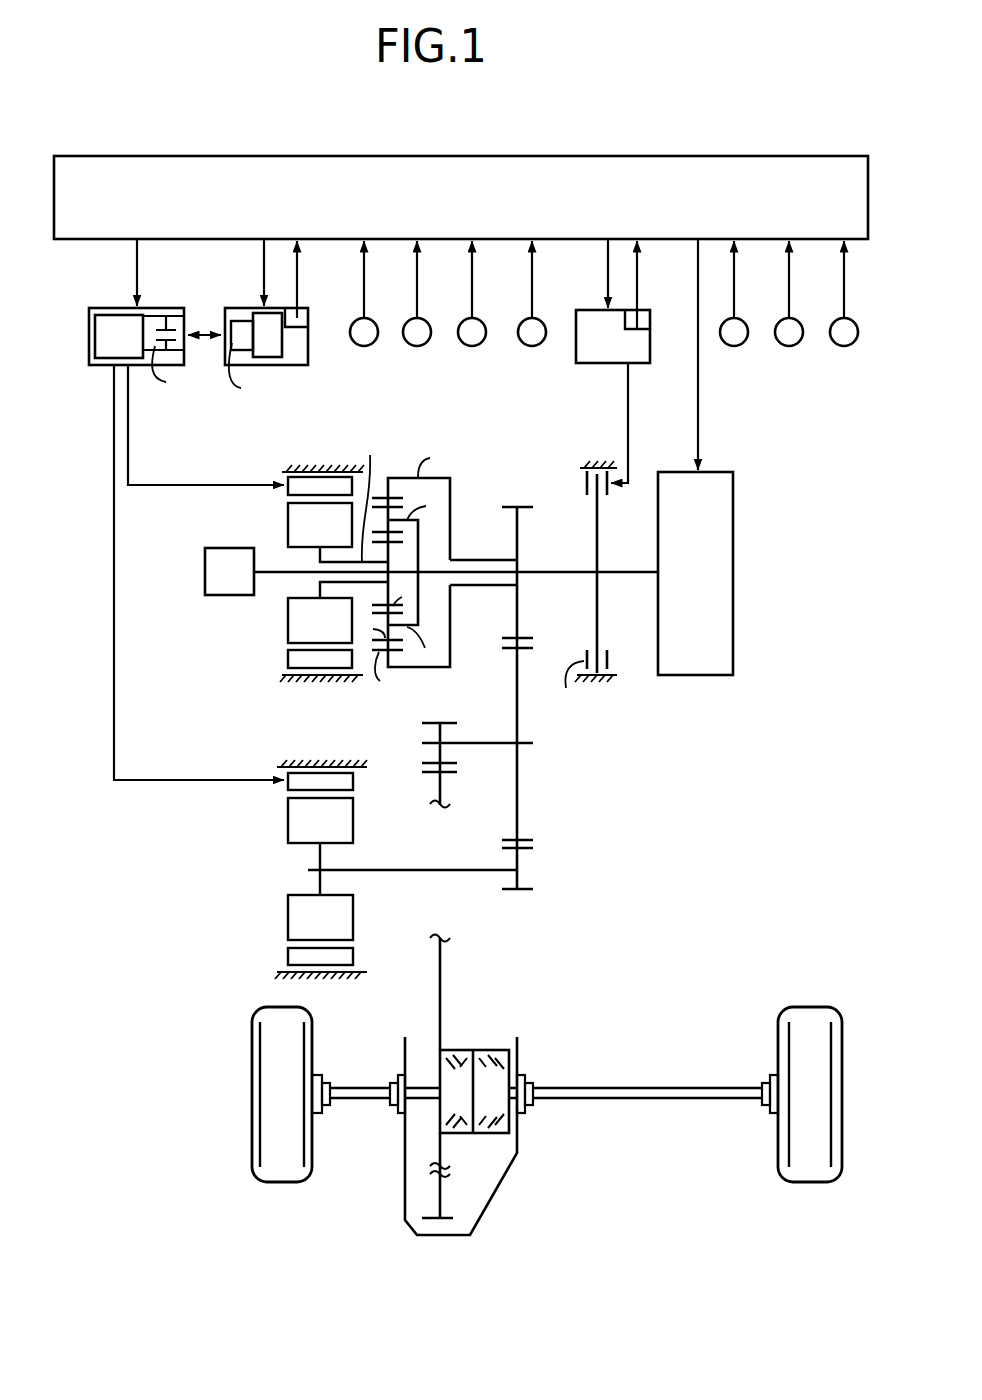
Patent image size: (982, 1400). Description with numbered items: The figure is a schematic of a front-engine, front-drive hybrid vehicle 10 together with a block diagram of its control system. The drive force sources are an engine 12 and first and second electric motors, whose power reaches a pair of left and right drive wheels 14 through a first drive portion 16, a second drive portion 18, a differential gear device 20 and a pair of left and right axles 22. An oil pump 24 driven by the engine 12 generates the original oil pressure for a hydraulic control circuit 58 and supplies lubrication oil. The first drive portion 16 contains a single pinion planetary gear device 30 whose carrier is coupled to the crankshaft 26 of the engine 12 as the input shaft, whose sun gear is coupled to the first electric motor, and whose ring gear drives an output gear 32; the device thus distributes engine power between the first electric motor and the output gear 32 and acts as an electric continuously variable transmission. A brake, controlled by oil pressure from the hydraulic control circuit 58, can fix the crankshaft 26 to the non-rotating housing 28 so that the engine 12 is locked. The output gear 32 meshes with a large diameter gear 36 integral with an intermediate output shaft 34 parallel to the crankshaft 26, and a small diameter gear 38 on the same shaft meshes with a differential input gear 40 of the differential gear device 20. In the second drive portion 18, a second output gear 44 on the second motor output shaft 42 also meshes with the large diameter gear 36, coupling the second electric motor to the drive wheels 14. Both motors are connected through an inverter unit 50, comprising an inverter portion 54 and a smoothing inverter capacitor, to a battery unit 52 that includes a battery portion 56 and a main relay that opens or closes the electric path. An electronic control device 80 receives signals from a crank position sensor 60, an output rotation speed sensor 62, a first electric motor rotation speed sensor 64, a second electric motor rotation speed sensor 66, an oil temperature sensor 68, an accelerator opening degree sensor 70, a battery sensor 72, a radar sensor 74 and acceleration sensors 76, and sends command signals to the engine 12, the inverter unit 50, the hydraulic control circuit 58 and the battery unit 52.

The hybrid vehicle 10 is at (748, 106).
The electronic control device 80 is at (815, 164).
The inverter unit 50 is at (153, 316).
The inverter portion 54 is at (120, 322).
The battery unit 52 is at (248, 315).
The battery sensor 72 is at (300, 320).
The battery portion 56 is at (270, 348).
The crank position sensor 60 is at (366, 346).
The output rotation speed sensor 62 is at (419, 346).
The first electric motor rotation speed sensor 64 is at (474, 346).
The second electric motor rotation speed sensor 66 is at (534, 346).
The hydraulic control circuit 58 is at (598, 364).
The oil temperature sensor 68 is at (647, 318).
The accelerator opening degree sensor 70 is at (736, 346).
The radar sensor 74 is at (791, 346).
The acceleration sensors 76 is at (846, 346).
The first drive portion 16 is at (632, 691).
The oil pump 24 is at (230, 591).
The planetary gear device 30 is at (393, 464).
The large diameter gear 36 is at (510, 656).
The output gear 32 is at (525, 635).
The crankshaft 26 is at (632, 578).
The housing 28 is at (590, 468).
The engine 12 is at (688, 668).
The intermediate output shaft 34 is at (480, 748).
The small diameter gear 38 is at (444, 727).
The differential input gear 40 is at (430, 776).
The second drive portion 18 is at (561, 891).
The MG2 output shaft 42 is at (396, 873).
The second output gear 44 is at (524, 852).
The differential gear device 20 is at (541, 1139).
The axles 22 is at (359, 1085).
The drive wheels 14 is at (284, 1171).